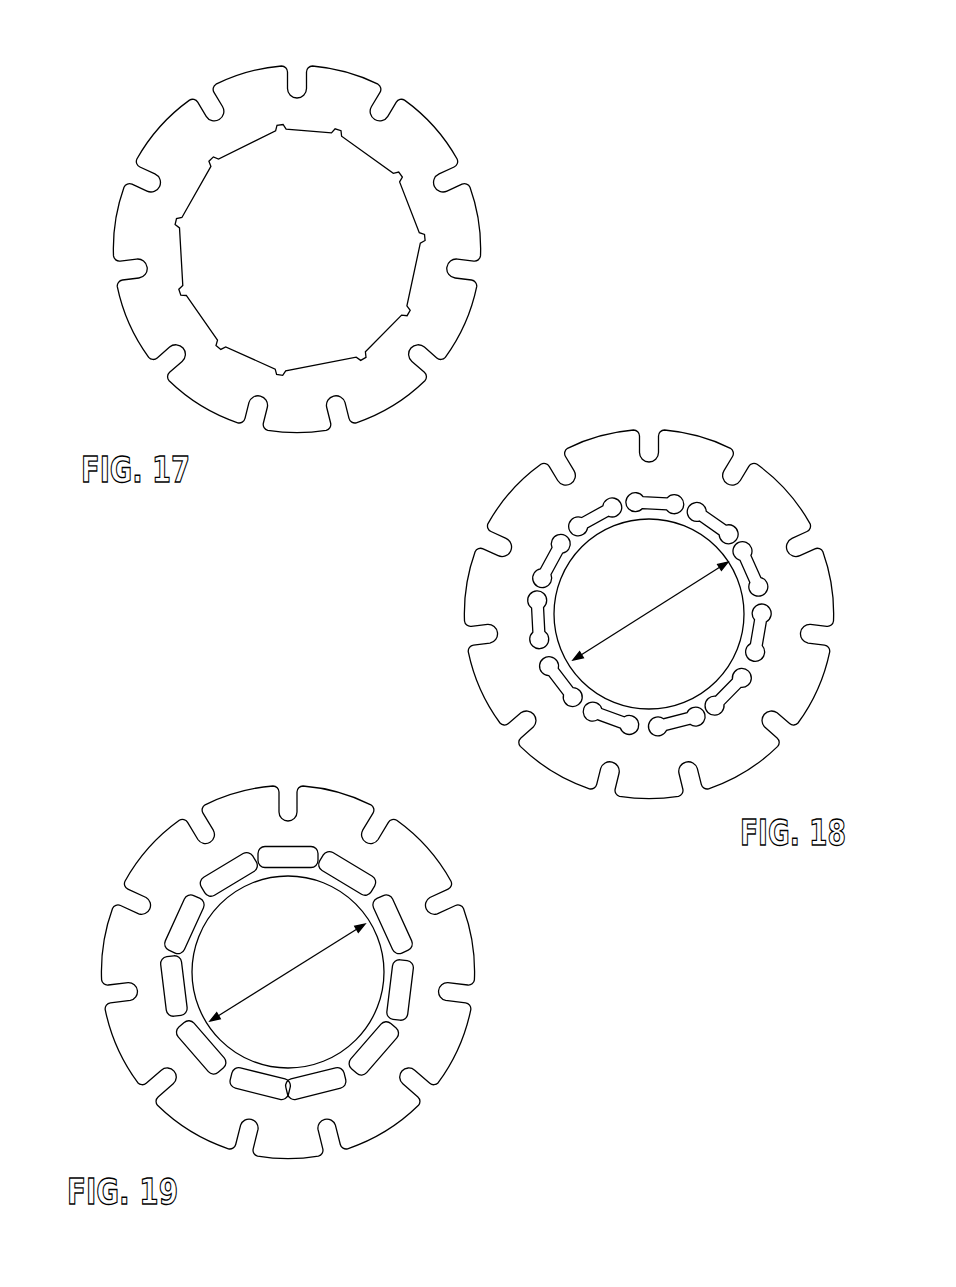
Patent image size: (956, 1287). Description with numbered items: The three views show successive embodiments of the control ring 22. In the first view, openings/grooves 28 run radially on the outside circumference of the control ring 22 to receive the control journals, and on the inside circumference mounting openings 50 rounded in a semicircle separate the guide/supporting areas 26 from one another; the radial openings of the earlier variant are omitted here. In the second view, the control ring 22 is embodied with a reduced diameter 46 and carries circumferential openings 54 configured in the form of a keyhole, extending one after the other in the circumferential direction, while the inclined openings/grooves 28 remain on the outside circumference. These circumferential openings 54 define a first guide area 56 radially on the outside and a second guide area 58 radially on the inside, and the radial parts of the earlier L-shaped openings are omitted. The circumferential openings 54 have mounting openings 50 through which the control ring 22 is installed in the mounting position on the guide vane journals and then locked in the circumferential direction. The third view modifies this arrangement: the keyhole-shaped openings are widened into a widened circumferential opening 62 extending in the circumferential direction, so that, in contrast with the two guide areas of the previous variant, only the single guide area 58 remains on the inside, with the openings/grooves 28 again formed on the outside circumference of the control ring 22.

In FIG. 17, the control ring 22 is at (418, 147).
In FIG. 18, the control ring 22 is at (770, 510).
In FIG. 19, the control ring 22 is at (412, 872).
In FIG. 17, the openings/grooves 28 is at (143, 173).
In FIG. 18, the openings/grooves 28 is at (744, 463).
In FIG. 19, the openings/grooves 28 is at (130, 900).
In FIG. 17, the guide/supporting areas 26 is at (412, 275).
In FIG. 17, the mounting openings 50 is at (273, 123).
In FIG. 18, the mounting openings 50 is at (723, 563).
In FIG. 19, the mounting openings 50 is at (342, 912).
In FIG. 18, the reduced diameter 46 is at (650, 614).
In FIG. 19, the reduced diameter 46 is at (289, 972).
In FIG. 18, the circumferential openings 54 is at (540, 632).
In FIG. 18, the second guide area 58 is at (570, 683).
In FIG. 19, the second guide area 58 is at (215, 1040).
In FIG. 18, the first guide area 56 is at (563, 693).
In FIG. 19, the widened circumferential opening 62 is at (372, 1040).